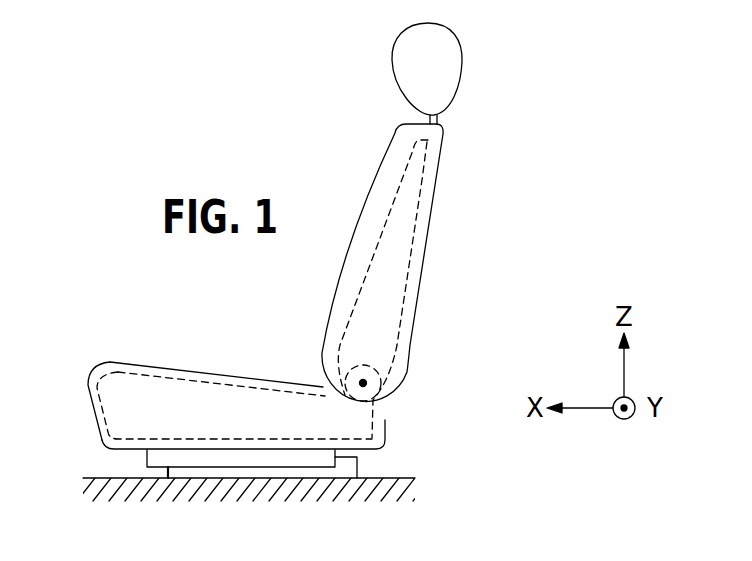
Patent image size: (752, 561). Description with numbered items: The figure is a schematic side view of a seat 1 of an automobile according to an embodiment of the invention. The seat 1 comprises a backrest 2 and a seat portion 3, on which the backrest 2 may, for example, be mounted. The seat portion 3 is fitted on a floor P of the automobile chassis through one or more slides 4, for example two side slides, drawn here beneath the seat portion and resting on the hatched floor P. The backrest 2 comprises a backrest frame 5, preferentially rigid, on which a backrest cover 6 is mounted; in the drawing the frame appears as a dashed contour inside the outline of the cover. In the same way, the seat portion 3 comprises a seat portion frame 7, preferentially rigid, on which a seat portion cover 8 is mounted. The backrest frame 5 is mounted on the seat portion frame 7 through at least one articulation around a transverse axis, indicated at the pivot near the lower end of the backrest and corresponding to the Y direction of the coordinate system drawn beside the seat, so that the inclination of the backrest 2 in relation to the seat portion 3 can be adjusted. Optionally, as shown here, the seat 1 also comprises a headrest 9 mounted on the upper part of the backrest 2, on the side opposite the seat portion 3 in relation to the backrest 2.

The seat 1 is at (486, 177).
The backrest 2 is at (406, 281).
The seat portion 3 is at (212, 370).
The slides 4 is at (238, 457).
The backrest frame 5 is at (400, 243).
The backrest cover 6 is at (412, 288).
The seat portion frame 7 is at (118, 412).
The seat portion cover 8 is at (90, 383).
The headrest 9 is at (448, 58).
The floor P is at (390, 477).